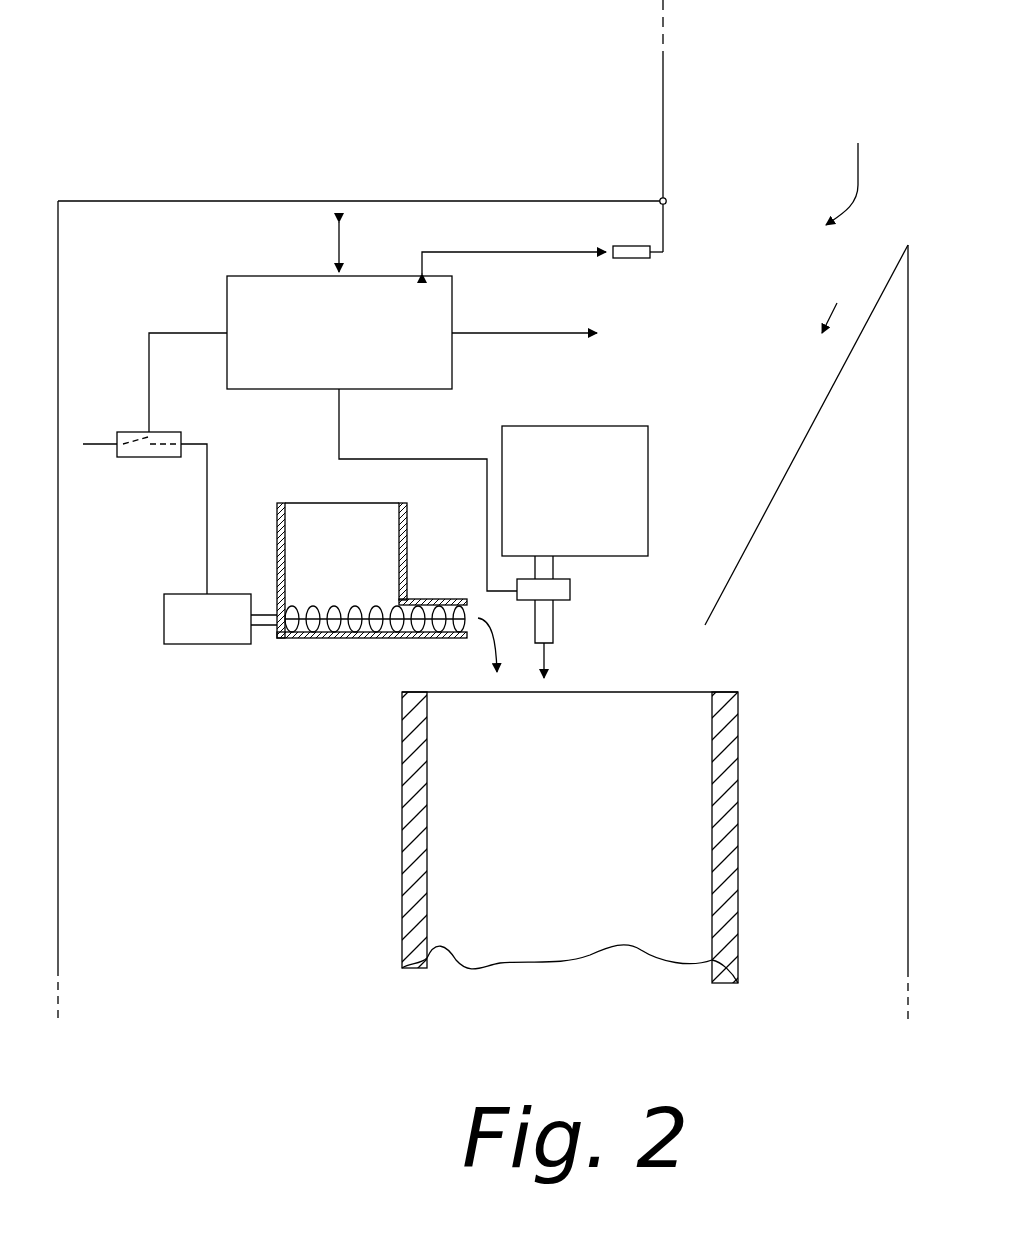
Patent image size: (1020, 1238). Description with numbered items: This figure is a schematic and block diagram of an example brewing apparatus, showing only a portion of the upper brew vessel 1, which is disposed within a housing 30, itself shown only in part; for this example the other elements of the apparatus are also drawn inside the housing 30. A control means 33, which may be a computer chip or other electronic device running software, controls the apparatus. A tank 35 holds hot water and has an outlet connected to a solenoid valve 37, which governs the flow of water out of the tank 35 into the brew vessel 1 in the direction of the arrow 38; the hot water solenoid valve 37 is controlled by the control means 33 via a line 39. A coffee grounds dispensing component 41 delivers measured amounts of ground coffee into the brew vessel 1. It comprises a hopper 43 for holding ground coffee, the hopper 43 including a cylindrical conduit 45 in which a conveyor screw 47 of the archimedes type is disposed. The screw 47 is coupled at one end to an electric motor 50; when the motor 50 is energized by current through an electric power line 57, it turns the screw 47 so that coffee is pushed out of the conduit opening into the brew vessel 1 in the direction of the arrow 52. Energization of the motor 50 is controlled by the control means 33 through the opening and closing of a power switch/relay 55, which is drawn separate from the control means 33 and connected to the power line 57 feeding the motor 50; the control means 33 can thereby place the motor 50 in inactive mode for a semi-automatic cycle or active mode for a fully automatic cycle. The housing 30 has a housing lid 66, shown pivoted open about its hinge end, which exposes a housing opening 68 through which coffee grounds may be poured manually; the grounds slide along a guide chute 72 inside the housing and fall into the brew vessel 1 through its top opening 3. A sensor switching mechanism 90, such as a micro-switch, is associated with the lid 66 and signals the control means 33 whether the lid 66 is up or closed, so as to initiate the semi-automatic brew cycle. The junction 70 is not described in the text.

The upper brew vessel 1 is at (766, 853).
The top opening of the brew vessel 3 is at (655, 690).
The housing 30 is at (908, 614).
The control means 33 is at (452, 378).
The tank 35 is at (648, 490).
The solenoid valve 37 is at (570, 588).
The arrow 38 is at (546, 660).
The line 39 is at (339, 441).
The coffee grounds dispensing component 41 is at (344, 598).
The hopper 43 is at (366, 573).
The cylindrical conduit 45 is at (455, 640).
The conveyor screw 47 is at (310, 622).
The electric motor 50 is at (220, 645).
The arrow 52 is at (499, 641).
The power switch/relay 55 is at (150, 458).
The electric power line 57 is at (97, 444).
The housing lid 66 is at (663, 105).
The housing opening 68 is at (851, 162).
The junction 70 is at (667, 200).
The guide chute 72 is at (805, 440).
The sensor switching mechanism 90 is at (637, 259).